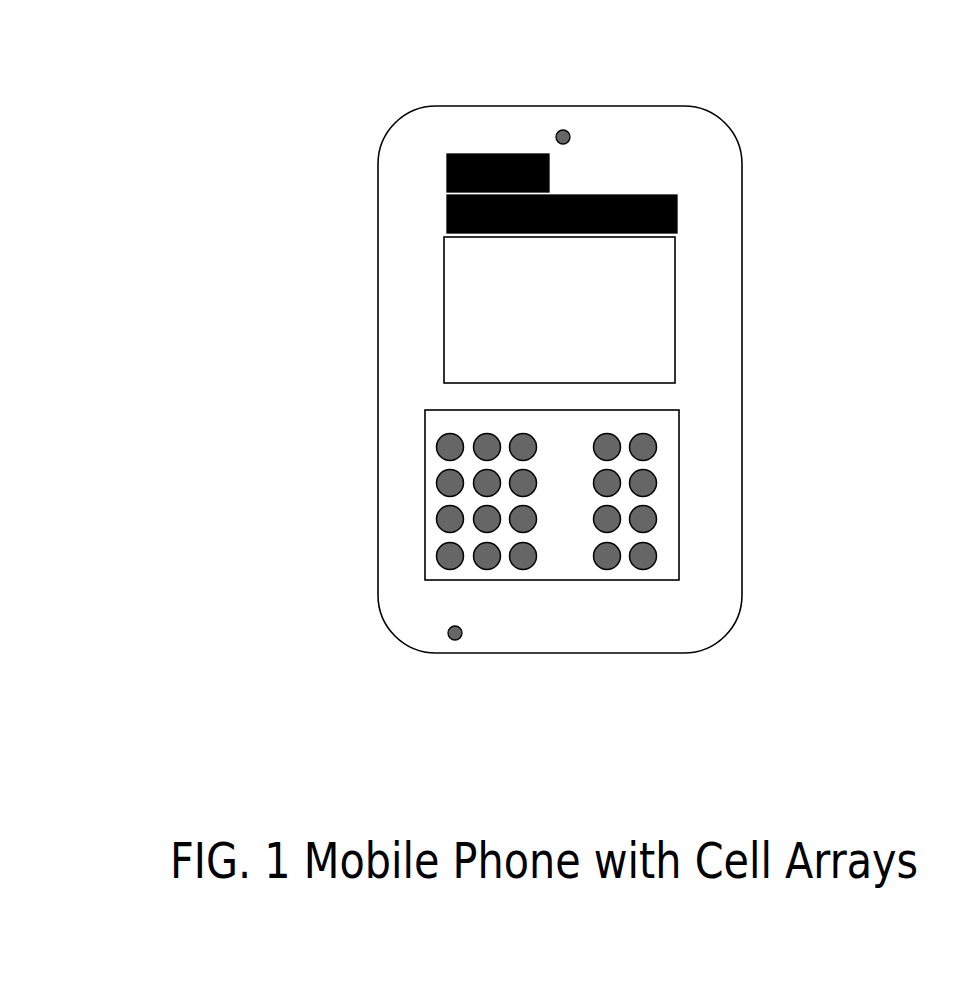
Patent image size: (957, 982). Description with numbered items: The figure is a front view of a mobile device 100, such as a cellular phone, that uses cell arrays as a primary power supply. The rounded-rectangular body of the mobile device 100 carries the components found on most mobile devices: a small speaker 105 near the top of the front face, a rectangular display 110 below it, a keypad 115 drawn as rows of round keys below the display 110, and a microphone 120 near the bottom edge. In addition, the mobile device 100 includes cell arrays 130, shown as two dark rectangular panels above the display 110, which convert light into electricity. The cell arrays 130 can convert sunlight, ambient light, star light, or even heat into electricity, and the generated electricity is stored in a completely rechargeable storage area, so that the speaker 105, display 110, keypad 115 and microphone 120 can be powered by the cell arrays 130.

The mobile device 100 is at (287, 267).
The speaker 105 is at (581, 121).
The display 110 is at (650, 309).
The keypad 115 is at (399, 518).
The microphone 120 is at (423, 643).
The cell arrays 130 is at (430, 147).